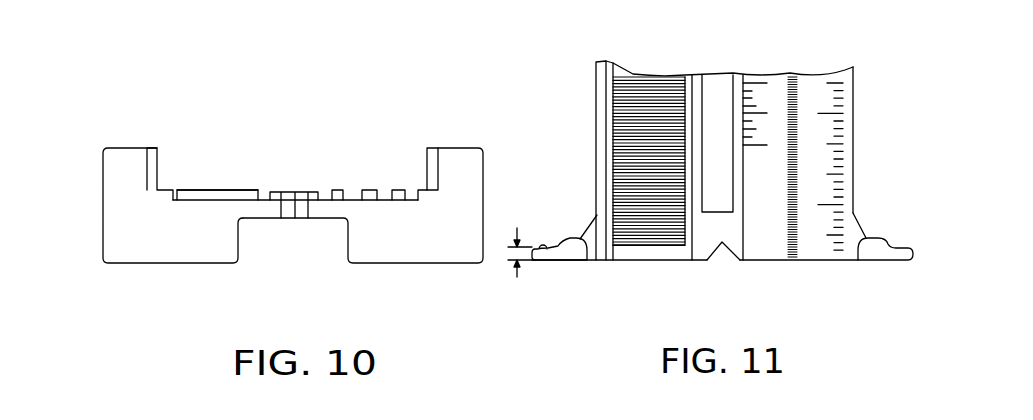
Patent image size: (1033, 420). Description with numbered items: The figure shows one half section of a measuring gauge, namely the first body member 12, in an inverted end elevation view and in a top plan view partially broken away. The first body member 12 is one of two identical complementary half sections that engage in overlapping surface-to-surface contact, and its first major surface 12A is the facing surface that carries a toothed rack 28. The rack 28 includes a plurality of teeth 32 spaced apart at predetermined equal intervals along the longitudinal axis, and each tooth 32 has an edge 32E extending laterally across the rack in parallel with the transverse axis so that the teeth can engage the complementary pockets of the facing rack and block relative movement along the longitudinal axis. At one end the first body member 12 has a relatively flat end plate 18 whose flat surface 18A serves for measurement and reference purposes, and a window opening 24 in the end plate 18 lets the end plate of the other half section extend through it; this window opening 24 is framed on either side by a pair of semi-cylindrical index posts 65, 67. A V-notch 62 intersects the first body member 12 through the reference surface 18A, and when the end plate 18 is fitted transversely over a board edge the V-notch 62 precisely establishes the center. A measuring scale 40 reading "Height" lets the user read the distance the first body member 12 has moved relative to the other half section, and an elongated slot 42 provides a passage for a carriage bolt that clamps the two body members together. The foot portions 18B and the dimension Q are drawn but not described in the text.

In FIG. 10, the first body member 12 is at (140, 105).
In FIG. 11, the first body member 12 is at (581, 59).
In FIG. 11, the first major surface 12A is at (602, 115).
In FIG. 10, the end plate 18 is at (99, 197).
In FIG. 11, the end plate 18 is at (889, 265).
In FIG. 10, the flat surface 18A is at (182, 250).
In FIG. 11, the flat surface 18A is at (617, 262).
In FIG. 11, the base foot 18B is at (540, 262).
In FIG. 10, the window opening 24 is at (306, 160).
In FIG. 10, the toothed rack 28 is at (197, 194).
In FIG. 11, the toothed rack 28 is at (603, 160).
In FIG. 10, the teeth 32 is at (243, 196).
In FIG. 10, the edge 32E is at (218, 189).
In FIG. 11, the edge 32E is at (638, 88).
In FIG. 10, the measuring scale 40 is at (378, 188).
In FIG. 11, the measuring scale 40 is at (837, 166).
In FIG. 11, the elongated slot 42 is at (722, 87).
In FIG. 10, the V-notch 62 is at (297, 207).
In FIG. 11, the V-notch 62 is at (722, 248).
In FIG. 10, the semi-cylindrical index post 65 is at (158, 157).
In FIG. 11, the semi-cylindrical index post 65 is at (591, 222).
In FIG. 10, the semi-cylindrical index post 67 is at (427, 163).
In FIG. 11, the semi-cylindrical index post 67 is at (858, 250).
In FIG. 11, the foot thickness dimension Q is at (522, 232).